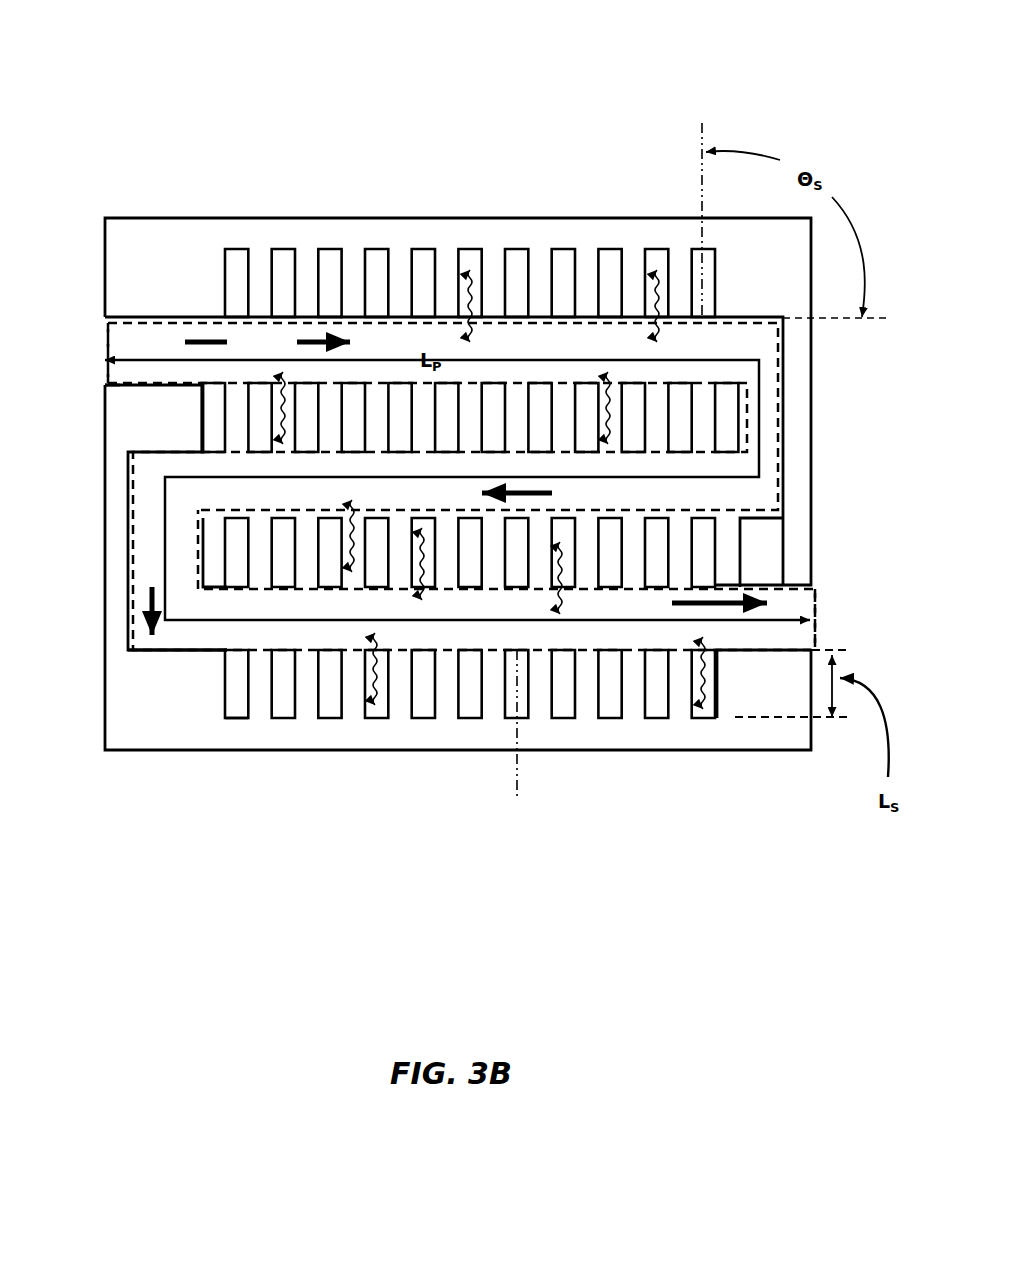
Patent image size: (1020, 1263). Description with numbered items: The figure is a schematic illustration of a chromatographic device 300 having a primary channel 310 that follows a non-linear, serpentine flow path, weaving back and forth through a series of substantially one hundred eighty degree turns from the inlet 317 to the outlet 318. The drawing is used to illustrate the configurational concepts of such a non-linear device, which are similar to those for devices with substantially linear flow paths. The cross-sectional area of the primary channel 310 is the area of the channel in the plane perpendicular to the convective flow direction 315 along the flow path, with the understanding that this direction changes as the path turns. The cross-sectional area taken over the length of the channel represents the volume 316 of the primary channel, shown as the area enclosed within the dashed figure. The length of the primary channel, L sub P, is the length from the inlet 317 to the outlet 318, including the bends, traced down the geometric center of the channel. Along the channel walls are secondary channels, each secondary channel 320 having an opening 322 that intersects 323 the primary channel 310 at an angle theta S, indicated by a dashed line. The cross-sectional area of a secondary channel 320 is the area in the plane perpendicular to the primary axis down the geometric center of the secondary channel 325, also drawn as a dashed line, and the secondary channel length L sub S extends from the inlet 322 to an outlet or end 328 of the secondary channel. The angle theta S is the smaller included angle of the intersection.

The chromatographic device 300 is at (176, 136).
The primary channel 310 is at (582, 350).
The convective flow direction 315 is at (451, 511).
The volume of the primary channel 316 is at (107, 335).
The inlet 317 is at (86, 360).
The outlet 318 is at (825, 613).
The secondary channel 320 is at (517, 277).
The opening of the secondary channel 322 is at (237, 660).
The intersection of the secondary channel with the primary channel 323 is at (853, 320).
The primary axis down the geometric center of the secondary channel 325 is at (614, 461).
The end of the secondary channel 328 is at (237, 728).